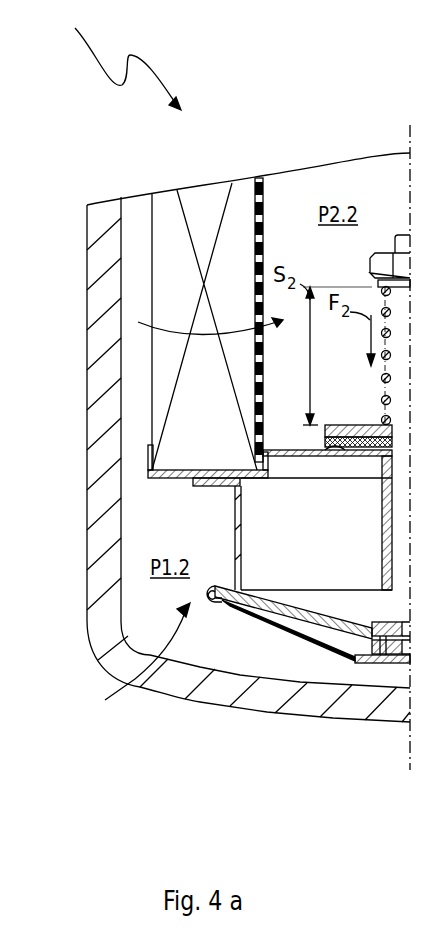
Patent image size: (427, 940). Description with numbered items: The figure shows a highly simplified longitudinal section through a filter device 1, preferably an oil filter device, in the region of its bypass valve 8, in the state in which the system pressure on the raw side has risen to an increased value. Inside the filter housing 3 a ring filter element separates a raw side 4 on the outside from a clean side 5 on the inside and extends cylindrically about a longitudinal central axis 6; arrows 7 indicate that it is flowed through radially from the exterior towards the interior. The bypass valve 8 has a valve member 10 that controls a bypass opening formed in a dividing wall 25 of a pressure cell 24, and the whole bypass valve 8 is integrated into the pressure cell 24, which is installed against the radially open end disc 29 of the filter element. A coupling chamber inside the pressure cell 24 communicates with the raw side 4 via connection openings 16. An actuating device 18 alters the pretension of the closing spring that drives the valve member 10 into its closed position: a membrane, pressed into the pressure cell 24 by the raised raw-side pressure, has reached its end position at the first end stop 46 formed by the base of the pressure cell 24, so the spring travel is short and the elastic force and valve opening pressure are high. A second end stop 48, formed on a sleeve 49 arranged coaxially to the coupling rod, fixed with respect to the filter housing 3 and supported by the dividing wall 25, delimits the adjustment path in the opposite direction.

The filter device 1 is at (121, 55).
The filter housing 3 is at (100, 248).
The raw side 4 is at (140, 287).
The clean side 5 is at (392, 193).
The longitudinal central axis 6 is at (410, 128).
The arrows 7 is at (172, 337).
The bypass valve 8 is at (139, 661).
The valve member 10 is at (355, 425).
The connection openings 16 is at (237, 528).
The actuating device 18 is at (322, 630).
The pressure cell 24 is at (286, 622).
The dividing wall 25 is at (275, 448).
The end disc 29 is at (162, 480).
The first end stop 46 is at (393, 664).
The second end stop 48 is at (383, 592).
The sleeve 49 is at (382, 525).